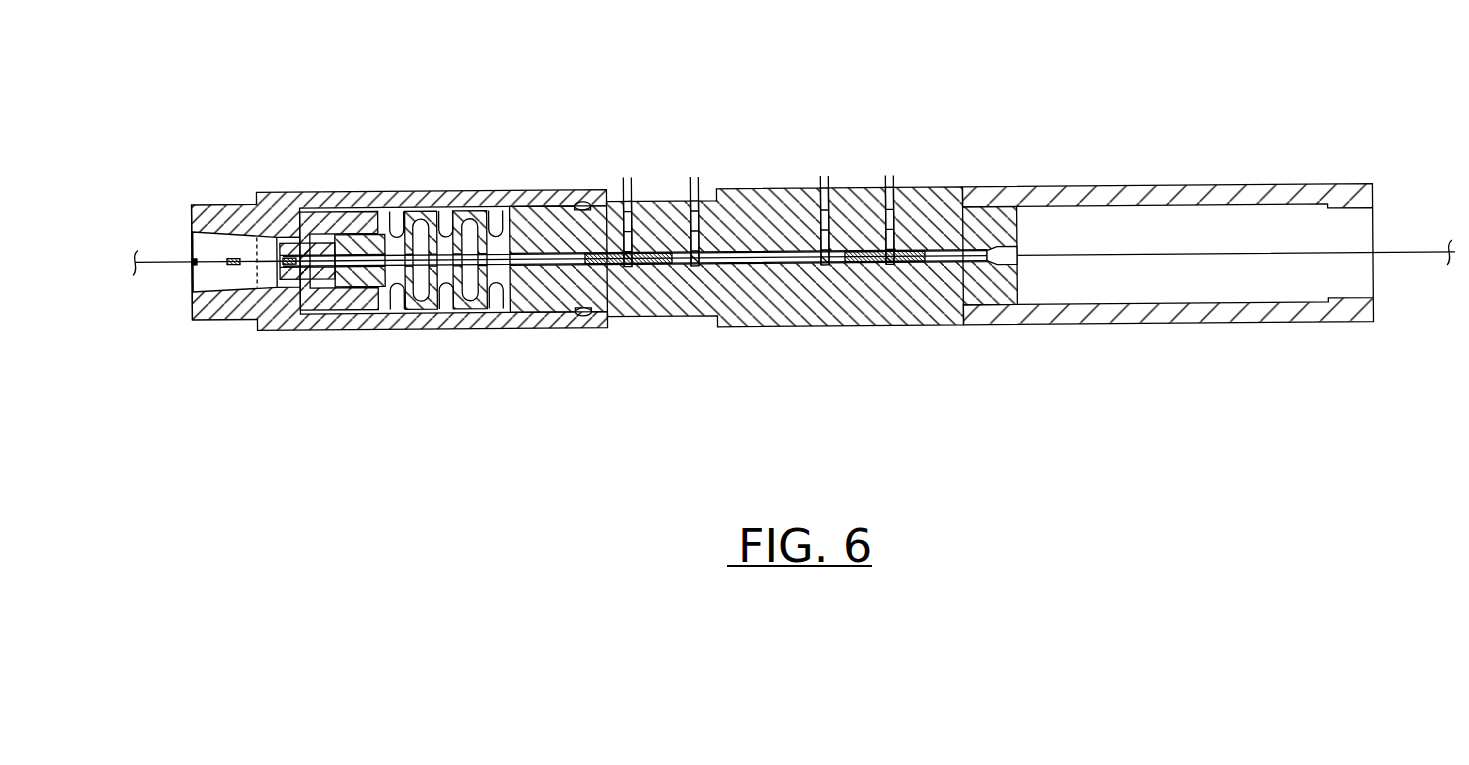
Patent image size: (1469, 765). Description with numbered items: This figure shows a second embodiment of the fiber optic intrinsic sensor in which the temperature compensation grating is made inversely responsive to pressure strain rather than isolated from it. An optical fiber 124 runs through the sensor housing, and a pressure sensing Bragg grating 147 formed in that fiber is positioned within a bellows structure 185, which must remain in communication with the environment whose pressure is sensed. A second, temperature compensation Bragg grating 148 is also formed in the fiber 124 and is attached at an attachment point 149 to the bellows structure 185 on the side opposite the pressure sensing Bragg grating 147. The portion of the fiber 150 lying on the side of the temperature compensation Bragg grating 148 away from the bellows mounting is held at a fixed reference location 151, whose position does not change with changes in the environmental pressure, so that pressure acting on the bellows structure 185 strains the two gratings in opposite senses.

The fiber 124 is at (555, 257).
The pressure sensing Bragg grating 147 is at (514, 266).
The temperature compensation Bragg grating 148 is at (240, 268).
The attachment point 149 is at (287, 268).
The portion of the fiber 150 is at (192, 263).
The fixed reference location 151 is at (192, 262).
The bellows structure 185 is at (445, 212).